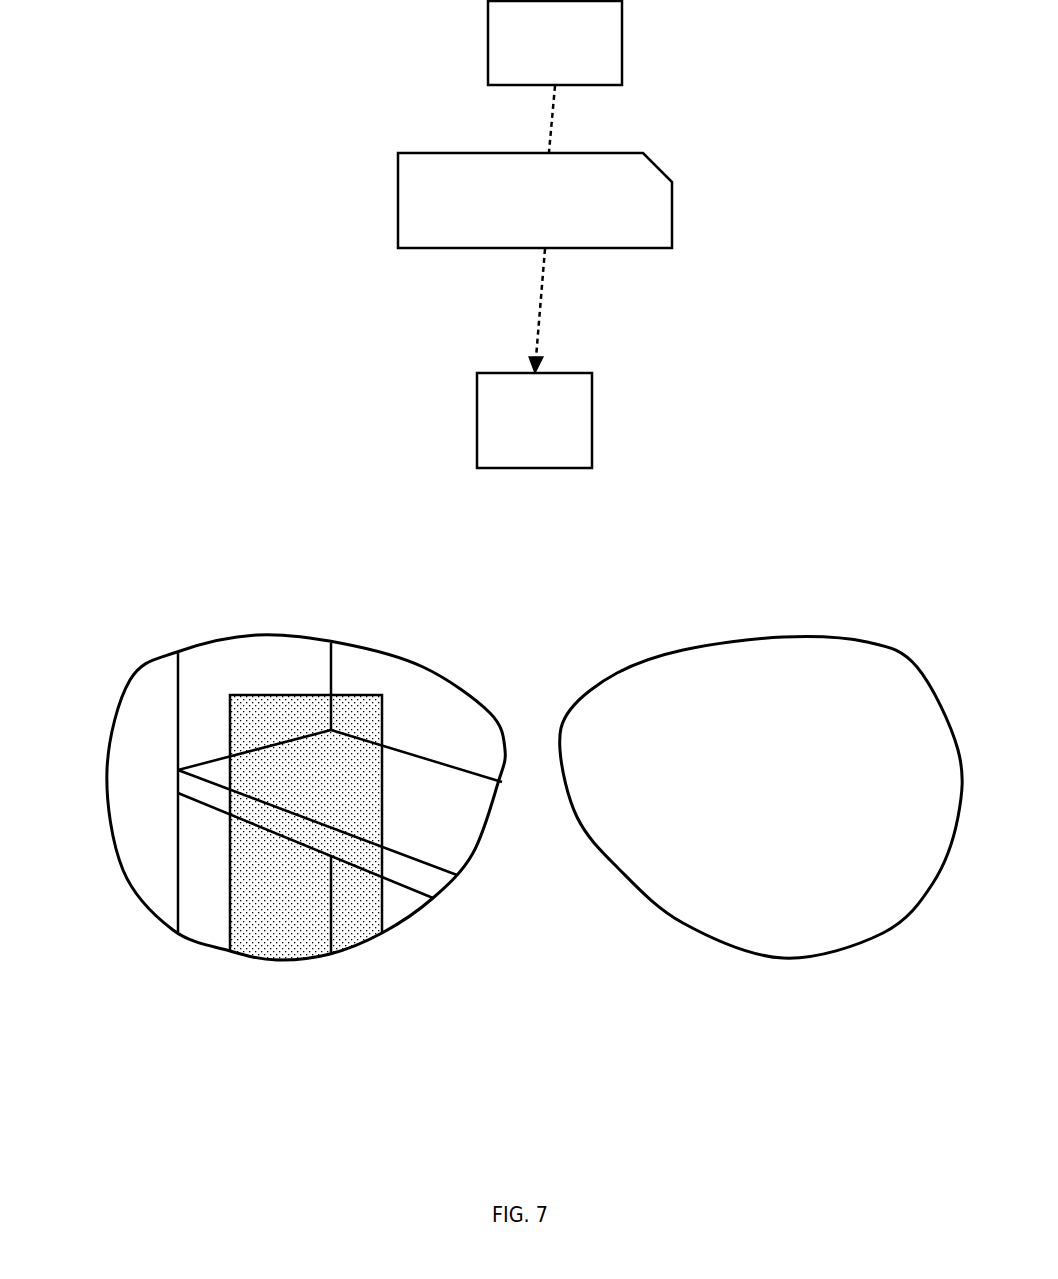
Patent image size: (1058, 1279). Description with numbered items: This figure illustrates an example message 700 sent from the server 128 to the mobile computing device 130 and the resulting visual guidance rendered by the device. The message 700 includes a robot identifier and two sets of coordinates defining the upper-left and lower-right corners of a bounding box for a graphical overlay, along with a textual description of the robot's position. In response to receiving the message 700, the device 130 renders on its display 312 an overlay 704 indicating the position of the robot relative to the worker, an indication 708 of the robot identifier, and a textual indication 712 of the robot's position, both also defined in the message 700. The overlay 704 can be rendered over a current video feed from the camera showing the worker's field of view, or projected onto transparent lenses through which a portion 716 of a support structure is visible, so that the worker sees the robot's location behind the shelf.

The server 128 is at (555, 43).
The mobile computing device 130 is at (534, 420).
The message 700 is at (672, 218).
The overlay 704 is at (260, 937).
The indication of the robot identifier 708 is at (745, 665).
The textual indication 712 is at (710, 708).
The portion of a support structure 716 is at (178, 750).
The display 312 is at (417, 918).